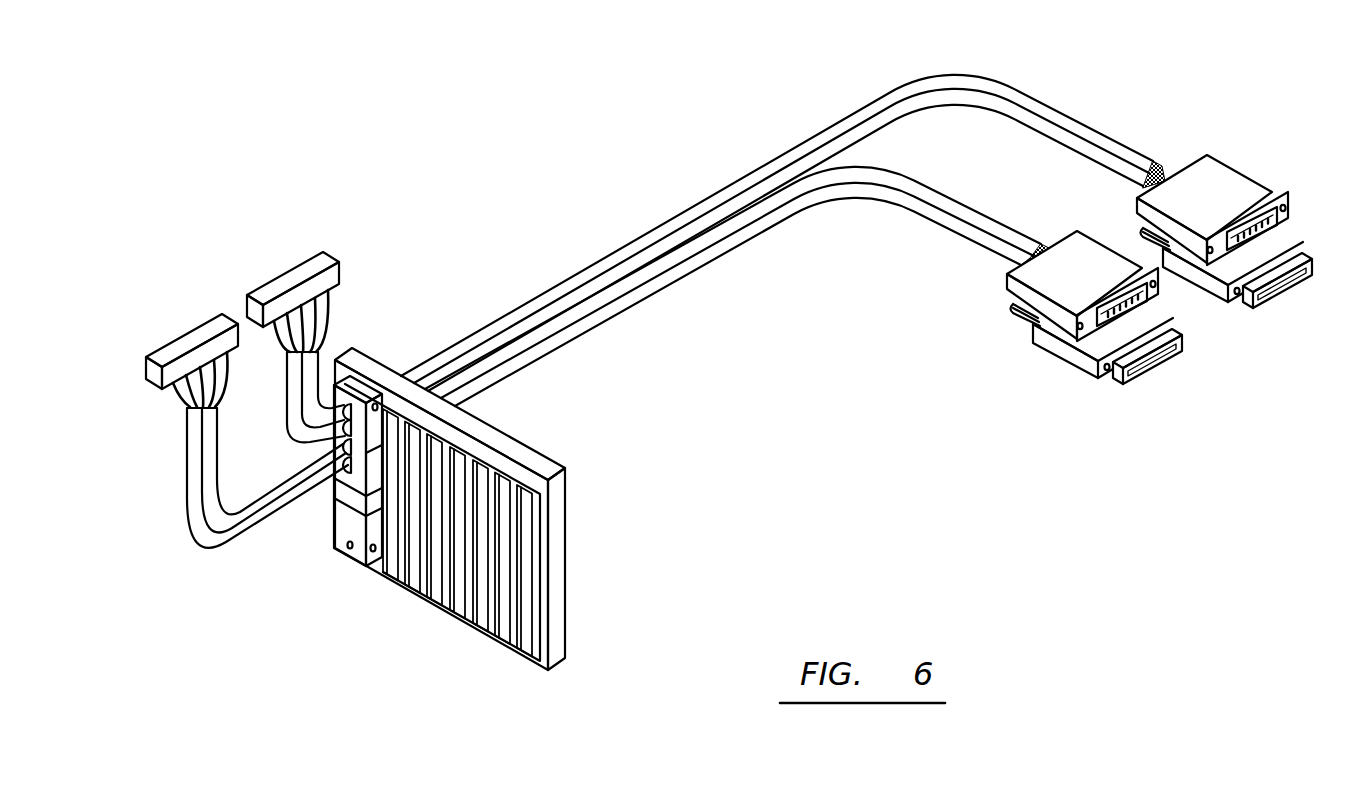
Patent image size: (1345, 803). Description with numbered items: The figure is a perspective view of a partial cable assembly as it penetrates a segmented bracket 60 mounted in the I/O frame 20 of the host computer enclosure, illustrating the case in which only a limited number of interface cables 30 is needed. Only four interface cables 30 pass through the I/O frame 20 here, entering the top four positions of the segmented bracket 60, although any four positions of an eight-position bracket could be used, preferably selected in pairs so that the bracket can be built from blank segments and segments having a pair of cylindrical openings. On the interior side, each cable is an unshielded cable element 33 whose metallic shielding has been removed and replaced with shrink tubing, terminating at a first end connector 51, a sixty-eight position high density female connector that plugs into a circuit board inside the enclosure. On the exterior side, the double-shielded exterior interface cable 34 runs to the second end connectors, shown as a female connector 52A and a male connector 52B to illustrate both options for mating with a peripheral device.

The I/O frame 20 is at (374, 350).
The interface cable 30 is at (797, 138).
The unshielded cable element 33 is at (278, 513).
The exterior interface cable 34 is at (648, 230).
The first end connector 51 is at (288, 258).
The second end connector (female) 52A is at (1260, 170).
The second end connector (male) 52B is at (1197, 294).
The segmented bracket 60 is at (350, 557).